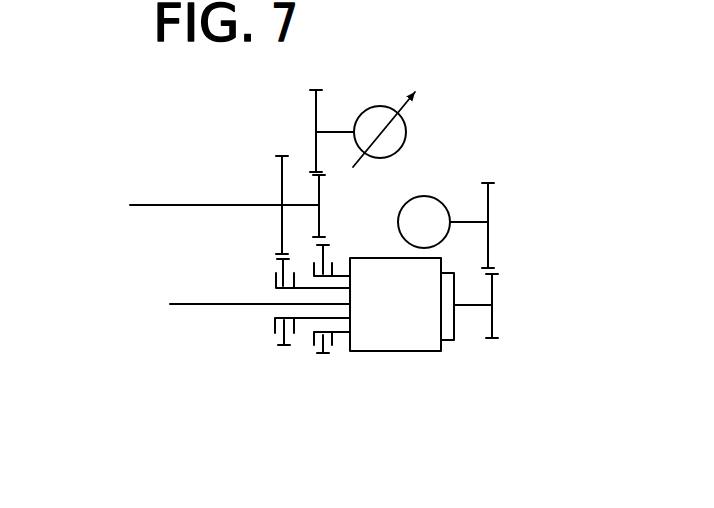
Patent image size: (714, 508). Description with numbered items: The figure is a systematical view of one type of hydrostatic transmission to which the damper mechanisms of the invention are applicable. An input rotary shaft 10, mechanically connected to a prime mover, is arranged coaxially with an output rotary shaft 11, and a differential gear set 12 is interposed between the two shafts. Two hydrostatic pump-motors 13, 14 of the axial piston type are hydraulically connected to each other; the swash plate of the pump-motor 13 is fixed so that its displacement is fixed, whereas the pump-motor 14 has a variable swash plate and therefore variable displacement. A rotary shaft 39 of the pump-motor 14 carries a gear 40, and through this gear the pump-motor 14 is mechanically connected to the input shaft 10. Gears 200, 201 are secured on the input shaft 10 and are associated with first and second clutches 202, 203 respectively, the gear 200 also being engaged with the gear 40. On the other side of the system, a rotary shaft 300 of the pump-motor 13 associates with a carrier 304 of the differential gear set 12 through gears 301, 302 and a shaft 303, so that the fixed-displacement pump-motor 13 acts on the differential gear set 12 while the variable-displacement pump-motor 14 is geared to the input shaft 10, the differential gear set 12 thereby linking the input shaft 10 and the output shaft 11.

The input rotary shaft 10 is at (195, 207).
The output rotary shaft 11 is at (180, 305).
The differential gear set 12 is at (361, 256).
The hydrostatic pump-motor 13 is at (430, 207).
The hydrostatic pump-motor 14 is at (406, 134).
The rotary shaft 39 is at (333, 131).
The gear 40 is at (315, 113).
The gear 200 is at (322, 192).
The gear 201 is at (278, 182).
The first clutch 202 is at (270, 334).
The second clutch 203 is at (318, 352).
The rotary shaft 300 is at (458, 220).
The gear 301 is at (489, 241).
The gear 302 is at (493, 294).
The shaft 303 is at (477, 307).
The carrier 304 is at (447, 341).